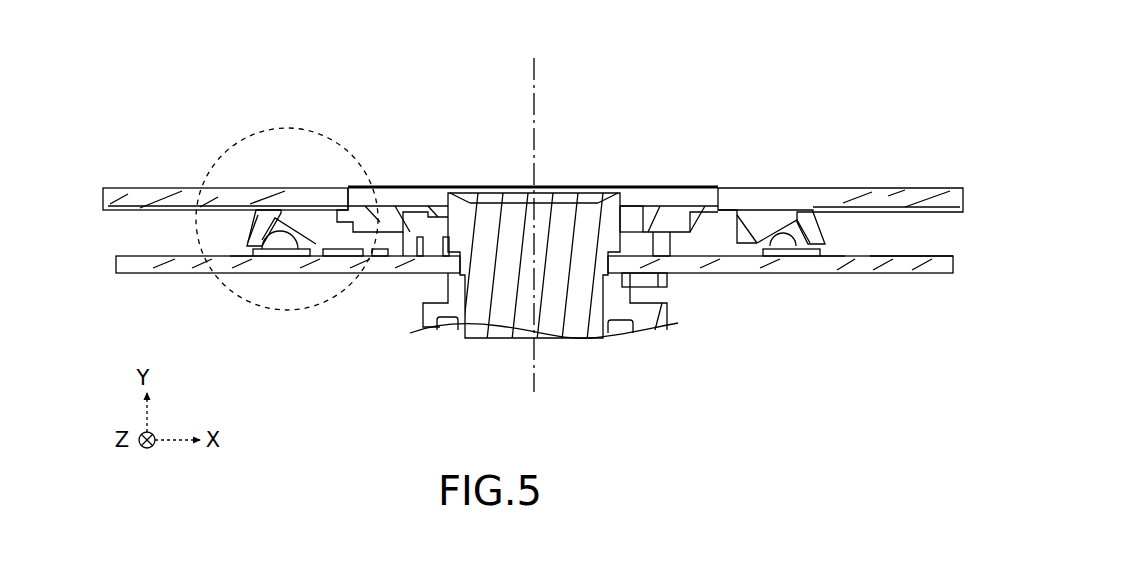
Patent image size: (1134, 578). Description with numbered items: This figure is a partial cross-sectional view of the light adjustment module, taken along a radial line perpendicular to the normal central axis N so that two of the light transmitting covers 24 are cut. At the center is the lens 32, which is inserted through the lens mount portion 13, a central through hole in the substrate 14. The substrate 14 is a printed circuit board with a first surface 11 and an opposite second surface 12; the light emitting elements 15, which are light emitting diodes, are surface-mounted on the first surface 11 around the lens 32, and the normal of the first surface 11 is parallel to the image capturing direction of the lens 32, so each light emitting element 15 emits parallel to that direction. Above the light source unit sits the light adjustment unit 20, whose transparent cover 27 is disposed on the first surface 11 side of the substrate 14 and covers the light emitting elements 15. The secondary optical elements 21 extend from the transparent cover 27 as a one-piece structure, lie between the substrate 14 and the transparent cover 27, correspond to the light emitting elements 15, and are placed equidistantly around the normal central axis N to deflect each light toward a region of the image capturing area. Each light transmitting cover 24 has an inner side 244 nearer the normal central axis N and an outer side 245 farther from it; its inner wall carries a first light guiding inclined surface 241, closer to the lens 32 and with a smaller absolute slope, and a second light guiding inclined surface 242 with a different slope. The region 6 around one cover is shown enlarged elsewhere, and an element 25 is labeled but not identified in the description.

The region 6 is at (287, 128).
The first surface 11 is at (903, 256).
The second surface 12 is at (903, 273).
The lens mount portion 13 is at (427, 273).
The substrate 14 is at (118, 259).
The light emitting element 15 is at (280, 262).
The light adjustment unit 20 is at (118, 187).
The secondary optical element 21 is at (238, 254).
The light transmitting cover 24 is at (337, 187).
The fan module 25 is at (163, 520).
The transparent cover 27 is at (903, 187).
The lens 32 is at (502, 200).
The first light guiding inclined surface 241 is at (303, 270).
The second light guiding inclined surface 242 is at (262, 257).
The inner side 244 is at (343, 270).
The outer side 245 is at (250, 242).
The normal central axis N is at (535, 96).